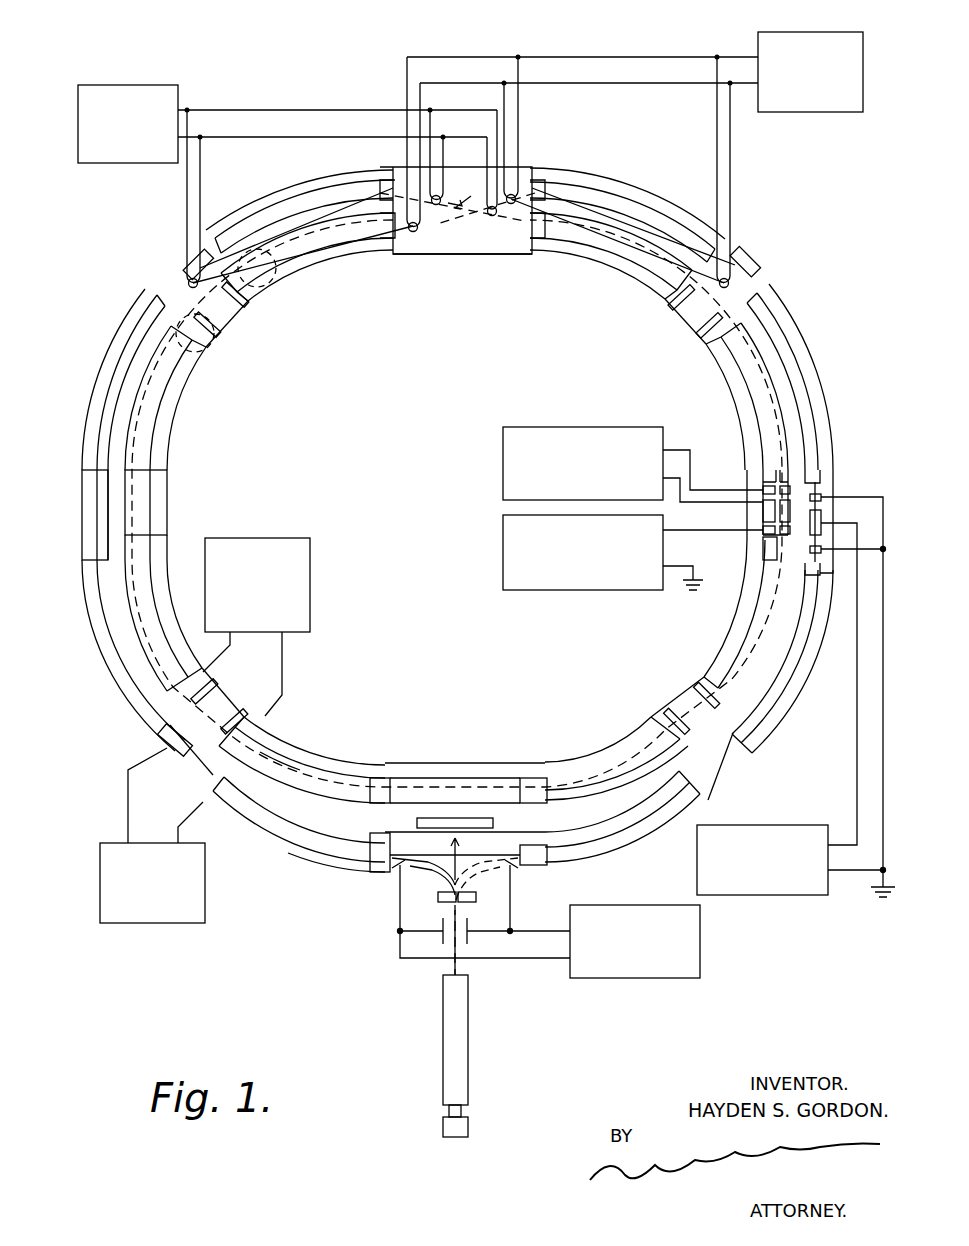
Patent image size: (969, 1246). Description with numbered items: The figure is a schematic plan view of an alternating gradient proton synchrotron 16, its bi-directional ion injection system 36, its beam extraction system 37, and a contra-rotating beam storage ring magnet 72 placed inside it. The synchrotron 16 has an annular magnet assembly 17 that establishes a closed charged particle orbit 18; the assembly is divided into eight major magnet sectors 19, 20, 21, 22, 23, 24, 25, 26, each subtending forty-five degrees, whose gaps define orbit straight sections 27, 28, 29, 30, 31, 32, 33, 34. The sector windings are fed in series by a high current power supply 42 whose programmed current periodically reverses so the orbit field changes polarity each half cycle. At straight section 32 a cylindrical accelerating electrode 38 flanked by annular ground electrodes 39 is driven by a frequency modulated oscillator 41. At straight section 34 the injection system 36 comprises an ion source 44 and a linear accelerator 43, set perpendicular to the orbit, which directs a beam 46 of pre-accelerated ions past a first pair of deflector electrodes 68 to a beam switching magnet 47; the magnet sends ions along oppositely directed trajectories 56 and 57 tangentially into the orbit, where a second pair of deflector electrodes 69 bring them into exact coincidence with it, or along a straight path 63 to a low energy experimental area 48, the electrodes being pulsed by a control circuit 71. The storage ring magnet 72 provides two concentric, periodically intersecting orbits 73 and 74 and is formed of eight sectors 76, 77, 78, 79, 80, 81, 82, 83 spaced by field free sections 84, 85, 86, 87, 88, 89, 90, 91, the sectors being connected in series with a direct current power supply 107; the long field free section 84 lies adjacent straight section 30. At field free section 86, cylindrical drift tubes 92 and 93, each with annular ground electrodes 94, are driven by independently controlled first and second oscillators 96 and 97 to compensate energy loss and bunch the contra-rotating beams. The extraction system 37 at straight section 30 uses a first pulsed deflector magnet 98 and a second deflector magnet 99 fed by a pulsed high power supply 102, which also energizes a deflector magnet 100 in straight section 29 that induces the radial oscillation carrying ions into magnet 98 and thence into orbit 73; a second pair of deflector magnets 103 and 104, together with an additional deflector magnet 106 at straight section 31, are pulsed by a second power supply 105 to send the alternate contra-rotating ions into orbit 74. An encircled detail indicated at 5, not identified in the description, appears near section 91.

The electrode assembly 5 is at (255, 320).
The alternating gradient proton synchrotron 16 is at (269, 952).
The annular magnet assembly 17 is at (114, 711).
The closed charged particle orbit 18 is at (115, 670).
The major magnet sector 19 is at (308, 836).
The major magnet sector 20 is at (150, 726).
The major magnet sector 21 is at (109, 377).
The major magnet sector 22 is at (274, 202).
The major magnet sector 23 is at (644, 210).
The major magnet sector 24 is at (806, 381).
The major magnet sector 25 is at (798, 692).
The major magnet sector 26 is at (618, 838).
The orbit straight section 27 is at (182, 758).
The orbit straight section 28 is at (112, 524).
The orbit straight section 29 is at (188, 291).
The orbit straight section 30 is at (465, 187).
The orbit straight section 31 is at (750, 292).
The orbit straight section 32 is at (820, 487).
The orbit straight section 33 is at (722, 756).
The orbit straight section 34 is at (502, 842).
The bi-directional ion injection system 36 is at (522, 1017).
The beam extraction system 37 is at (542, 140).
The cylindrical accelerating electrode 38 is at (822, 520).
The annular ground electrodes 39 is at (822, 497).
The frequency modulated oscillator 41 is at (768, 825).
The high current power supply 42 is at (147, 923).
The linear accelerator 43 is at (443, 1024).
The ion source 44 is at (443, 1128).
The beam of pre-accelerated ions 46 is at (452, 970).
The beam switching magnet 47 is at (408, 894).
The low energy target or experimental area 48 is at (456, 817).
The ion trajectory 56 is at (470, 890).
The ion trajectory 57 is at (440, 897).
The straight path 63 is at (451, 852).
The first pair of deflector electrodes 68 is at (468, 934).
The second pair of deflector electrodes 69 is at (392, 872).
The control circuit 71 is at (700, 950).
The storage ring magnet 72 is at (368, 701).
The storage ring orbit 73 is at (290, 768).
The storage ring orbit 74 is at (286, 738).
The storage ring sector 76 is at (600, 264).
The storage ring sector 77 is at (738, 381).
The storage ring sector 78 is at (728, 646).
The storage ring sector 79 is at (591, 758).
The storage ring sector 80 is at (338, 762).
The storage ring sector 81 is at (163, 578).
The storage ring sector 82 is at (163, 430).
The storage ring sector 83 is at (322, 260).
The field free section 84 is at (463, 254).
The field free section 85 is at (688, 315).
The field free section 86 is at (760, 490).
The field free section 87 is at (688, 700).
The field free section 88 is at (471, 766).
The field free section 89 is at (230, 710).
The field free section 90 is at (158, 506).
The field free section 91 is at (231, 328).
The cylindrical drift tube 92 is at (762, 515).
The cylindrical drift tube 93 is at (788, 516).
The annular ground electrodes 94 is at (762, 532).
The first oscillator 96 is at (503, 547).
The second oscillator 97 is at (503, 460).
The first pulsed deflector magnet 98 is at (438, 210).
The second deflector magnet 99 is at (492, 216).
The additional pulsed deflector magnet 100 is at (189, 278).
The pulsed high power supply 102 is at (126, 85).
The deflector magnet 103 is at (510, 212).
The deflector magnet 104 is at (410, 236).
The second power supply 105 is at (808, 32).
The additional deflector magnet 106 is at (730, 278).
The direct current power supply 107 is at (310, 589).